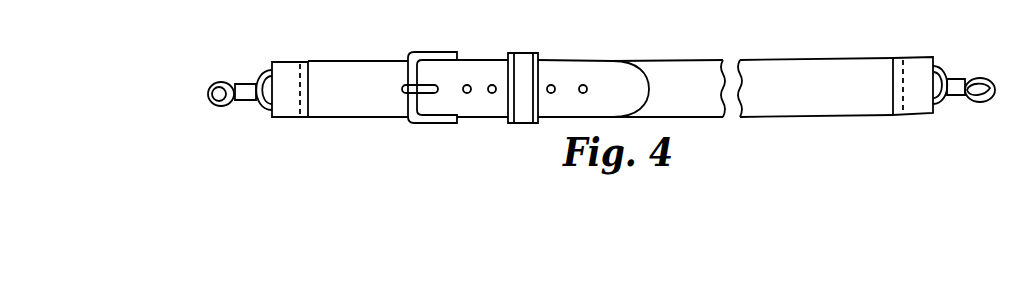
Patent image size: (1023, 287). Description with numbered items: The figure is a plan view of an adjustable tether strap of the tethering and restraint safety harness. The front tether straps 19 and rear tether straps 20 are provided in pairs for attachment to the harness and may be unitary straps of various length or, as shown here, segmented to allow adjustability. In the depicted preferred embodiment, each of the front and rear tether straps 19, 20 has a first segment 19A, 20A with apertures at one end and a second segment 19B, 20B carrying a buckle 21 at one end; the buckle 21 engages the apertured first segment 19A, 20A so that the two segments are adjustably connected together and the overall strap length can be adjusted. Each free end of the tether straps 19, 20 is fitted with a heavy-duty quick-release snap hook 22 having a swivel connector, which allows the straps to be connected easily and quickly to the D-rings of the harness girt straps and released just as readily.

The front tether strap 19 is at (792, 59).
The rear tether strap 20 is at (836, 87).
The first segment 19A is at (345, 70).
The first segment 20A is at (460, 88).
The second segment 19B is at (675, 75).
The second segment 20B is at (677, 88).
The buckle 21 is at (431, 51).
The quick-release snap hook 22 is at (243, 83).